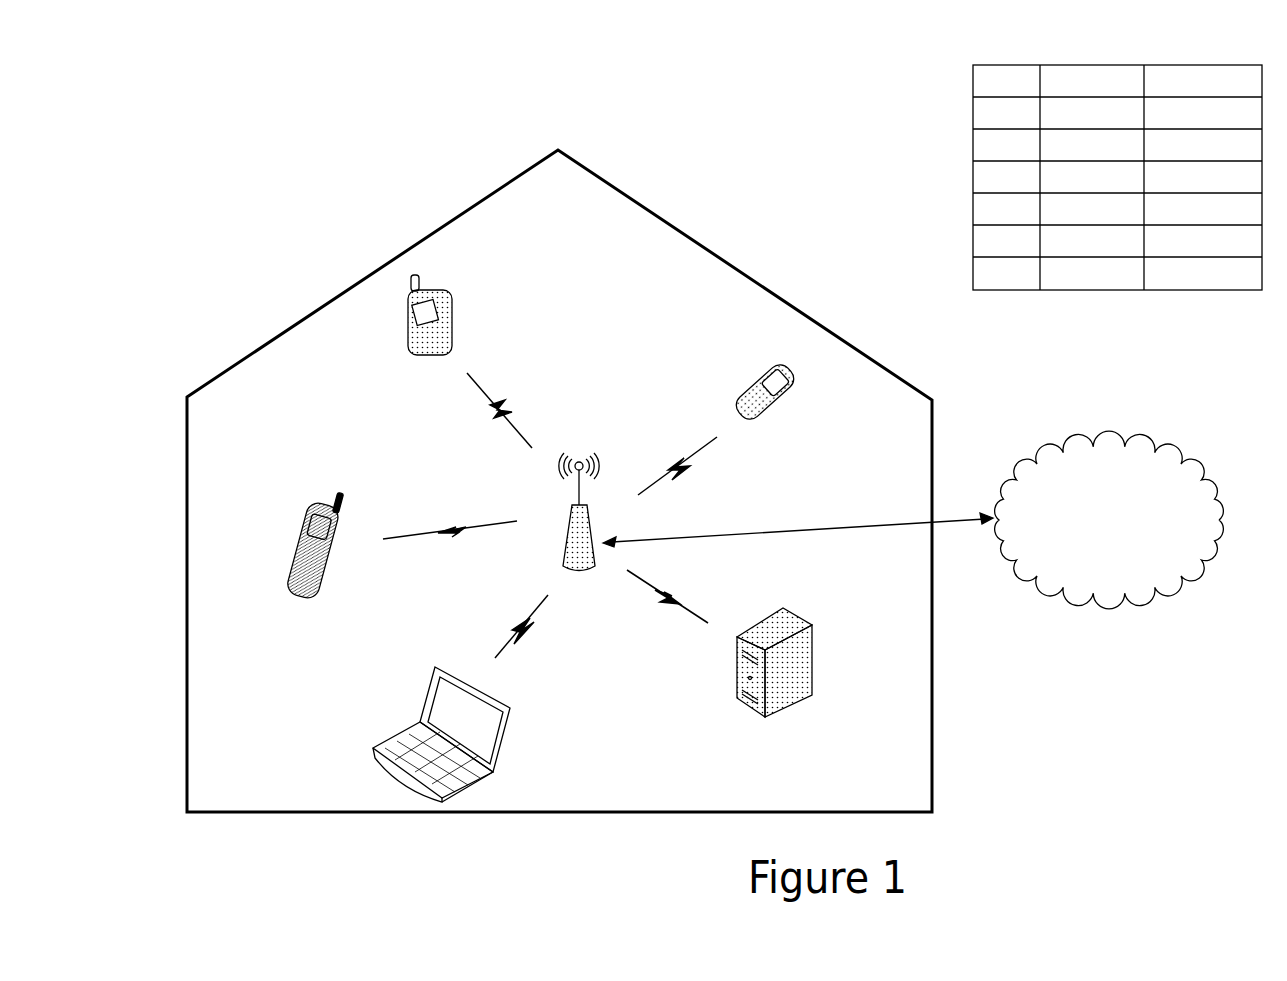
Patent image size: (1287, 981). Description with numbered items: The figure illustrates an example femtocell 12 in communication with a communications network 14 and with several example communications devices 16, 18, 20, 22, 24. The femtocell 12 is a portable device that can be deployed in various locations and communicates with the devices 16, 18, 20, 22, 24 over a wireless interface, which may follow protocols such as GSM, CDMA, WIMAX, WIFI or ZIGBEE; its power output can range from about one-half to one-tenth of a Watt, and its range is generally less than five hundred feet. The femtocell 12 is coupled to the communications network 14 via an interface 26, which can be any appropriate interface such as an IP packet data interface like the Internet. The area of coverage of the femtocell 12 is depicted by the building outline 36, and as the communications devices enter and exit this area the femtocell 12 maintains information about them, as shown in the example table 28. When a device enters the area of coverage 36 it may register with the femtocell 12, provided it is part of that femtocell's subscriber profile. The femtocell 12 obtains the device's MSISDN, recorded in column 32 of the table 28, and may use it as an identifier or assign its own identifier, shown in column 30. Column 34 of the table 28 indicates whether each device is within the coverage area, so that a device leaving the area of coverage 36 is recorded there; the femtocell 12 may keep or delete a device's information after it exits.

The femtocell 12 is at (565, 538).
The communications network 14 is at (1110, 592).
The communications device 16 is at (406, 332).
The communications device 18 is at (302, 548).
The communications device 20 is at (390, 746).
The communications device 22 is at (810, 622).
The communications device 24 is at (752, 395).
The interface 26 is at (847, 528).
The table 28 is at (961, 180).
The column 30 is at (1013, 300).
The column 32 is at (1087, 300).
The column 34 is at (1201, 300).
The building outline 36 is at (675, 227).